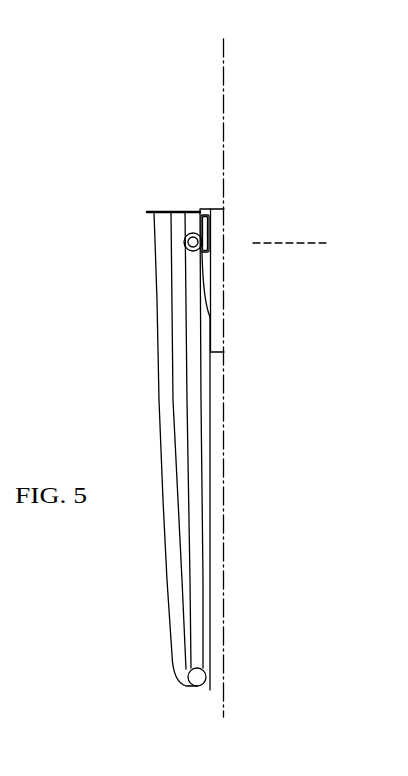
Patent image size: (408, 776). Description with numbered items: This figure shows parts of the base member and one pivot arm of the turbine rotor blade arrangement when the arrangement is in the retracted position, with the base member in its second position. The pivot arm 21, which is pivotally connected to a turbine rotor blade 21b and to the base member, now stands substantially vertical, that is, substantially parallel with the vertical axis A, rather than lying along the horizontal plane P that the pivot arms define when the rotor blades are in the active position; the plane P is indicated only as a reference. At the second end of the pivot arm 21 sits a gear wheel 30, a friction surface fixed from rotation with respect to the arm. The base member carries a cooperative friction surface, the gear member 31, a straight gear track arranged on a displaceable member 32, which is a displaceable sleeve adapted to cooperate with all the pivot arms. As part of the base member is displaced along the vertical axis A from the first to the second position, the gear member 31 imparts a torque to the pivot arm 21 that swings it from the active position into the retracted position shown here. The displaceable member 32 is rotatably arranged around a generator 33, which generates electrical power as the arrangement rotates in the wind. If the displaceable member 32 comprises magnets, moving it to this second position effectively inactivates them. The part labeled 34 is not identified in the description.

The vertical axis A is at (223, 144).
The horizontal plane P is at (282, 245).
The pivot arm 21 is at (187, 398).
The turbine rotor blade 21b is at (157, 293).
The gear wheel 30 is at (192, 213).
The gear member 31 is at (192, 233).
The displaceable member 32 is at (203, 274).
The generator 33 is at (219, 333).
The upper bracket portion 34 is at (219, 230).